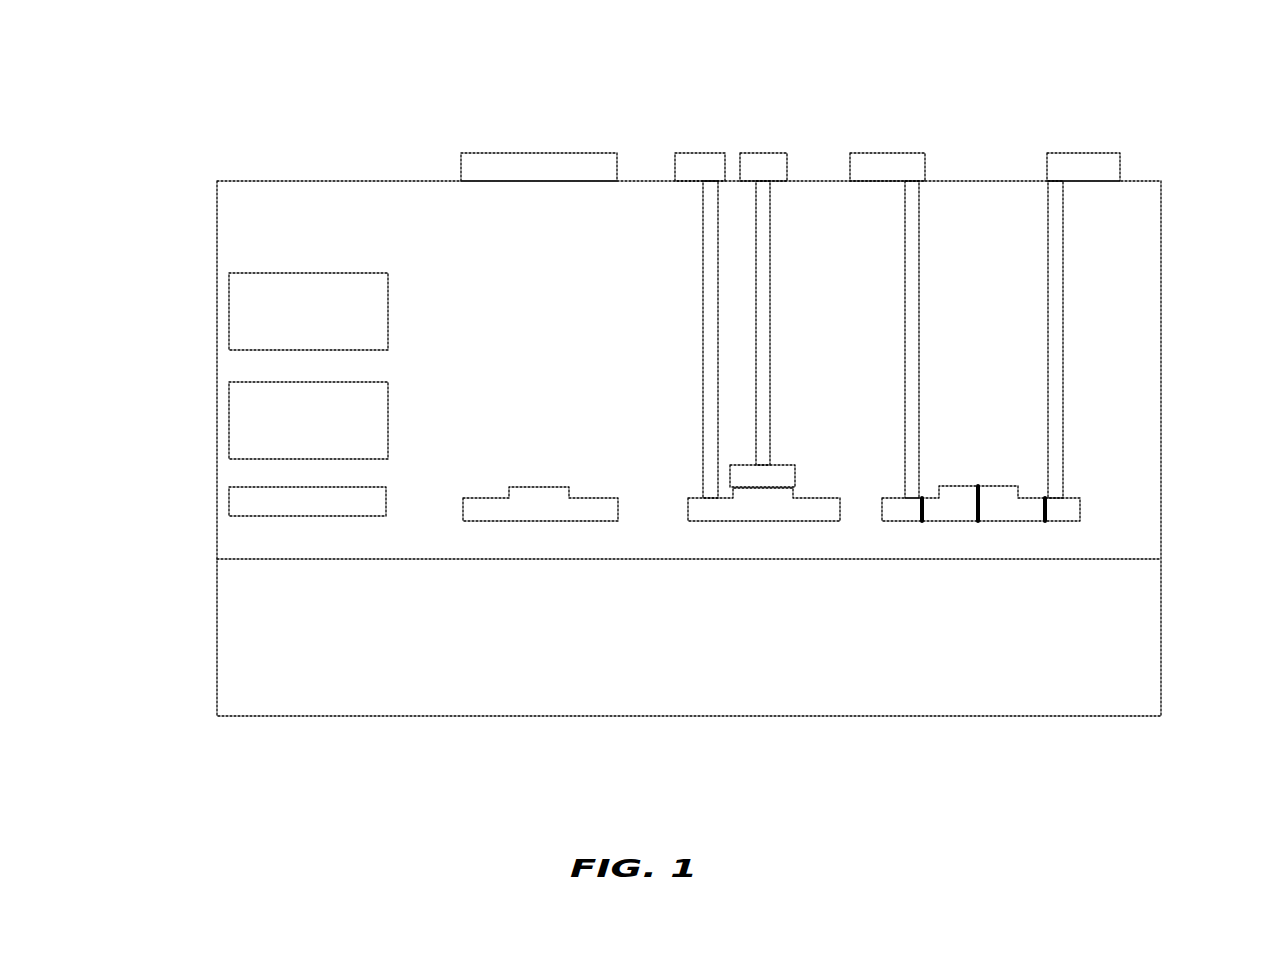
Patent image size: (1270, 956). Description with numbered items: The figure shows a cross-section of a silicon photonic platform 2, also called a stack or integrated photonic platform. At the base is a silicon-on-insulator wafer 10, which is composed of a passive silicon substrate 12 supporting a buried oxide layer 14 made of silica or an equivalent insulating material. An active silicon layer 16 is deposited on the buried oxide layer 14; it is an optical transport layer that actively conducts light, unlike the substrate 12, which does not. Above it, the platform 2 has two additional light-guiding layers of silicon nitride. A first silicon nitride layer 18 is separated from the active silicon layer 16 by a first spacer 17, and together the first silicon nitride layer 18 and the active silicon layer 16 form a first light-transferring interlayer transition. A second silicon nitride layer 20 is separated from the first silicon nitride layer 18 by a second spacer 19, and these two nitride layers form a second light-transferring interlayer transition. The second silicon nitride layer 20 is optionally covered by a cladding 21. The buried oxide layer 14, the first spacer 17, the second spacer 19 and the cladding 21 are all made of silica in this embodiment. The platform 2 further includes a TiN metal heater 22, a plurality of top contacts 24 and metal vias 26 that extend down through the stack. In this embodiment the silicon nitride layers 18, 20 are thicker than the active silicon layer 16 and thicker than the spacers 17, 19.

The silicon photonic platform 2 is at (217, 97).
The silicon-on-insulator wafer 10 is at (1182, 487).
The silicon substrate 12 is at (232, 647).
The buried oxide layer 14 is at (229, 535).
The active silicon layer 16 is at (239, 497).
The first spacer 17 is at (244, 468).
The first silicon nitride layer 18 is at (239, 424).
The second spacer 19 is at (244, 363).
The second silicon nitride layer 20 is at (244, 309).
The cladding 21 is at (244, 219).
The TiN metal heater 22 is at (548, 153).
The top contacts 24 is at (1085, 153).
The metal vias 26 is at (770, 210).